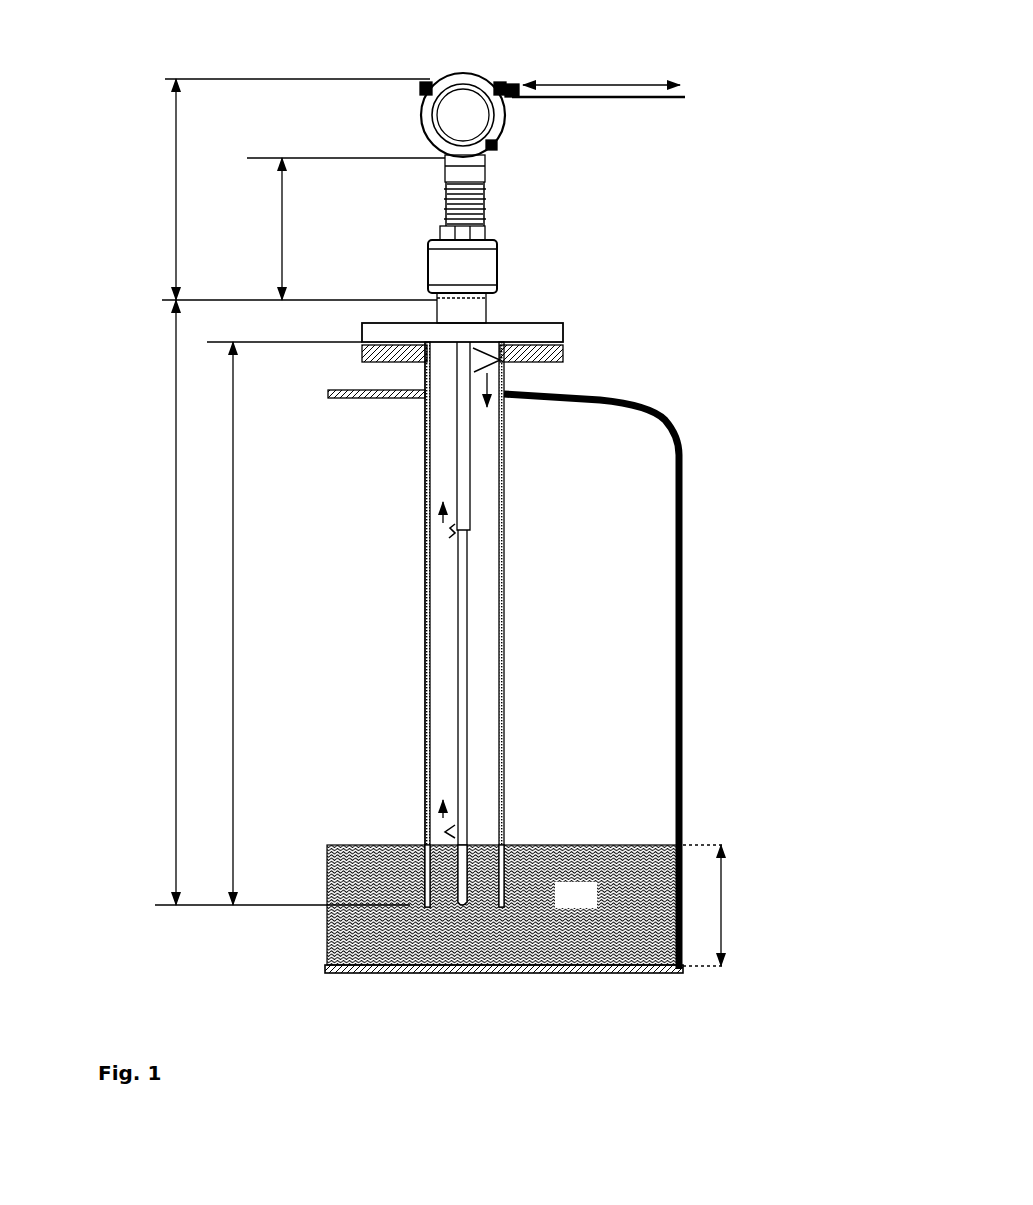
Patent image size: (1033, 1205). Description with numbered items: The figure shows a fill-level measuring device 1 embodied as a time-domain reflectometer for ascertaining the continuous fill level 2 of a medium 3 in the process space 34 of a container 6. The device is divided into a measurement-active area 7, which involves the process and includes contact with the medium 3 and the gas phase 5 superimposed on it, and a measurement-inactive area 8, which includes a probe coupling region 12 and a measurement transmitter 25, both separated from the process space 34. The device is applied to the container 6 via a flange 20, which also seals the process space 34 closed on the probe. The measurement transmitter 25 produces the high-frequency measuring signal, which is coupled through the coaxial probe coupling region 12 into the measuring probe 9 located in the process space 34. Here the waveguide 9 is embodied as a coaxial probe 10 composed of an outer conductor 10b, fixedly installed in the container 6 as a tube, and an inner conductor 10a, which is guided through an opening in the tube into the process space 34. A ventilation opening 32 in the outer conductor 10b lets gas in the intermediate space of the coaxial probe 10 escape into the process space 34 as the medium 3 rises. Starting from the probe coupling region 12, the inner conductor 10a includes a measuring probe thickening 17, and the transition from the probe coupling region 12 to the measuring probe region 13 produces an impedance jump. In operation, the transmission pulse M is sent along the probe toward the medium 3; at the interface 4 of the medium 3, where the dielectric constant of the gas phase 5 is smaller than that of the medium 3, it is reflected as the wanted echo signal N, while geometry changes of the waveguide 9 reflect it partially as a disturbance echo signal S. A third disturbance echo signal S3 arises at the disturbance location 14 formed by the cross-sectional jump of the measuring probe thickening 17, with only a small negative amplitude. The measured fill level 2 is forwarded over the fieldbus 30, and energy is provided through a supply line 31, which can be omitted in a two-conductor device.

The fill-level measuring device 1 is at (283, 34).
The fill level 2 is at (722, 907).
The medium 3 is at (357, 877).
The interface 4 is at (318, 841).
The gas phase 5 is at (489, 508).
The container 6 is at (645, 413).
The measurement-active area 7 is at (176, 647).
The measurement-inactive area 8 is at (175, 228).
The measuring probe 9 is at (386, 624).
The coaxial probe 10 is at (400, 437).
The inner conductor 10a is at (458, 578).
The outer conductor 10b is at (425, 505).
The probe coupling region 12 is at (279, 257).
The measuring probe region 13 is at (233, 698).
The disturbance location 14 is at (460, 533).
The measuring probe thickening 17 is at (462, 472).
The flange 20 is at (572, 335).
The measurement transmitter 25 is at (460, 108).
The fieldbus 30 is at (648, 85).
The supply line 31 is at (648, 97).
The ventilation opening 32 is at (418, 408).
The process space 34 is at (578, 723).
The transmission pulse M is at (500, 367).
The wanted echo signal N is at (453, 838).
The disturbance echo signal S is at (374, 539).
The third disturbance echo signal S3 is at (447, 533).